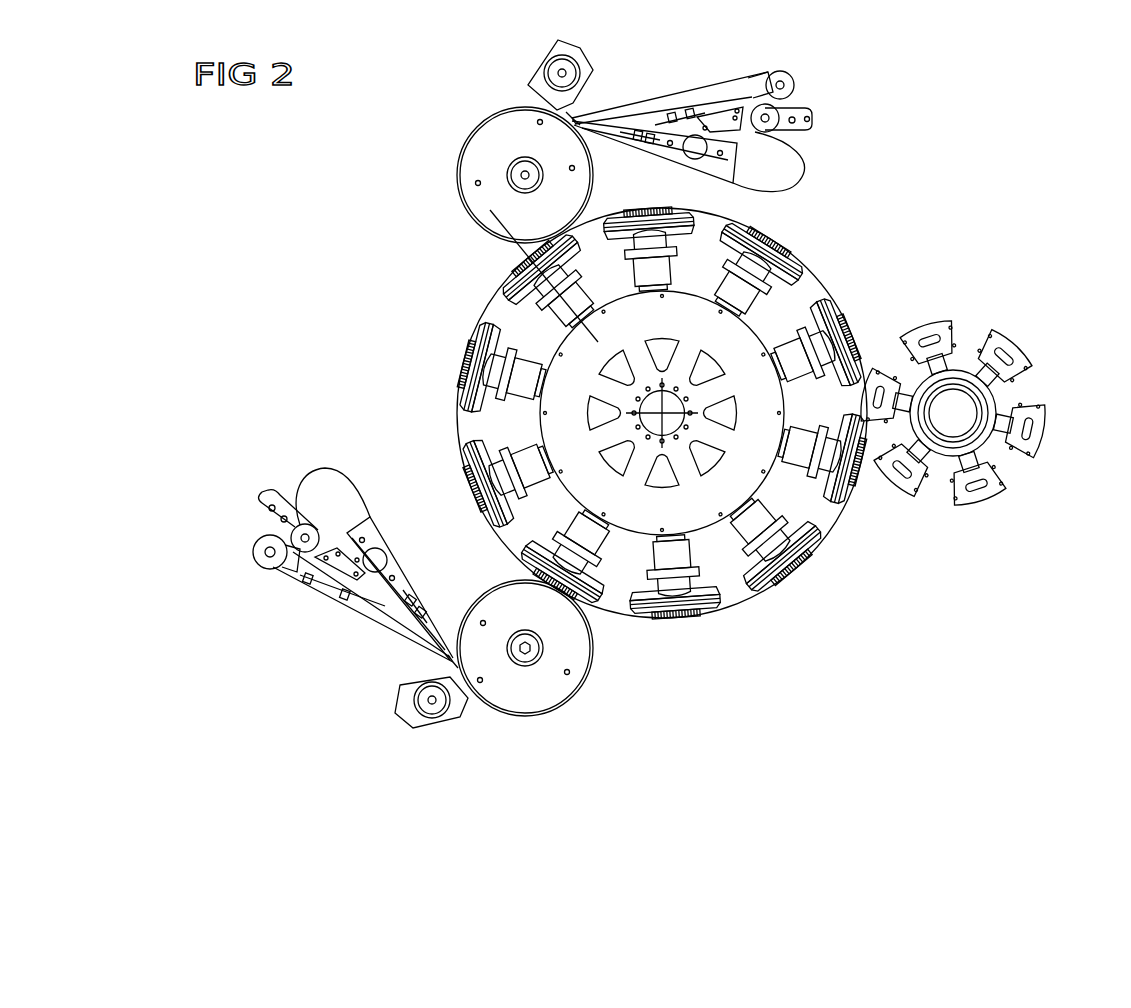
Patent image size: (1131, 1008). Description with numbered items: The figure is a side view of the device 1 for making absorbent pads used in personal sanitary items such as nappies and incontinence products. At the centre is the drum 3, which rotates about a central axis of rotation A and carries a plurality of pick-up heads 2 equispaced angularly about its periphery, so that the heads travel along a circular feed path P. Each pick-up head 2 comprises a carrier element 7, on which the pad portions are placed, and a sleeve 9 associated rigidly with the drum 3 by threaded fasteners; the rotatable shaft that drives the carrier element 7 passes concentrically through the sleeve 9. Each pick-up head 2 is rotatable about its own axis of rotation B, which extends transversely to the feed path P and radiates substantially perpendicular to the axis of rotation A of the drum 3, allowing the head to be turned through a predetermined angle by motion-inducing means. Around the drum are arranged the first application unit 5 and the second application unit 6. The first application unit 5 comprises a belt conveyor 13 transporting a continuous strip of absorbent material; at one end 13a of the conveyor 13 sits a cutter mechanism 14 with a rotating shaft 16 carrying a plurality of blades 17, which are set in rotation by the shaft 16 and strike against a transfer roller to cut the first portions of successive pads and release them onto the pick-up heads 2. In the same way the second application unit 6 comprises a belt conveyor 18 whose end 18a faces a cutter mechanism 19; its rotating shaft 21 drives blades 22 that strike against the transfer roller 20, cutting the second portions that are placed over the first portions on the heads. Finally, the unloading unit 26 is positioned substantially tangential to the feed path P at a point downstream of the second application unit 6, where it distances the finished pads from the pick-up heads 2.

The device 1 is at (1002, 592).
The pick-up head 2 is at (651, 428).
The drum 3 is at (706, 375).
The first application unit 5 is at (342, 602).
The second application unit 6 is at (614, 104).
The carrier element 7 is at (785, 207).
The sleeve 9 is at (660, 272).
The belt conveyor 13 is at (313, 592).
The end of the conveyor 13a is at (485, 622).
The cutter mechanism 14 is at (394, 702).
The rotating shaft 16 is at (440, 707).
The blades 17 is at (457, 667).
The belt conveyor 18 is at (740, 75).
The end of the conveyor 18a is at (580, 128).
The cutter mechanism 19 is at (519, 68).
The transfer roller 20 is at (483, 155).
The rotating shaft 21 is at (537, 68).
The blades 22 is at (572, 45).
The unloading unit 26 is at (965, 345).
The axis of rotation A is at (655, 418).
The axis of rotation B is at (473, 222).
The feed path P is at (455, 432).